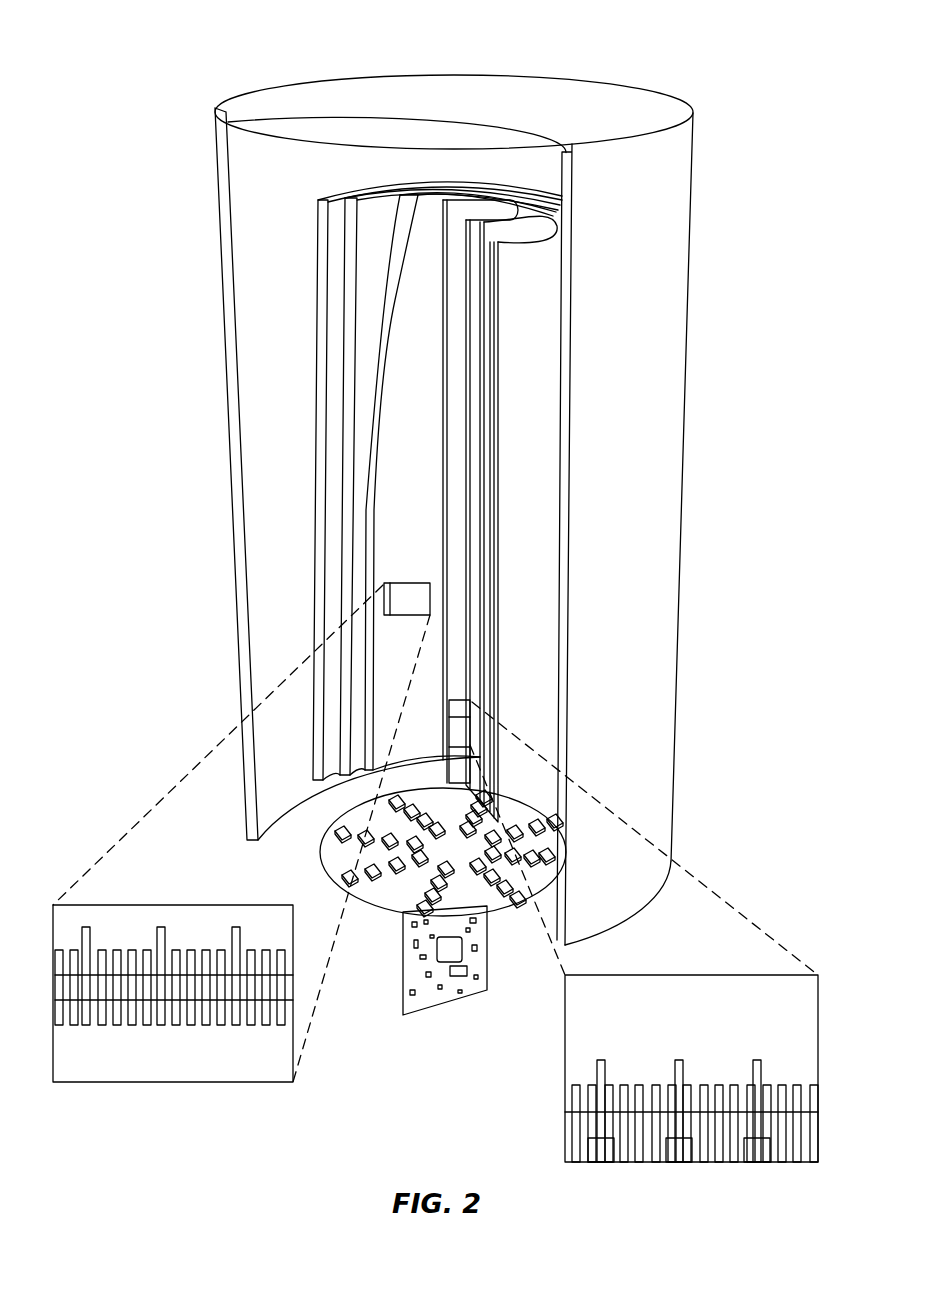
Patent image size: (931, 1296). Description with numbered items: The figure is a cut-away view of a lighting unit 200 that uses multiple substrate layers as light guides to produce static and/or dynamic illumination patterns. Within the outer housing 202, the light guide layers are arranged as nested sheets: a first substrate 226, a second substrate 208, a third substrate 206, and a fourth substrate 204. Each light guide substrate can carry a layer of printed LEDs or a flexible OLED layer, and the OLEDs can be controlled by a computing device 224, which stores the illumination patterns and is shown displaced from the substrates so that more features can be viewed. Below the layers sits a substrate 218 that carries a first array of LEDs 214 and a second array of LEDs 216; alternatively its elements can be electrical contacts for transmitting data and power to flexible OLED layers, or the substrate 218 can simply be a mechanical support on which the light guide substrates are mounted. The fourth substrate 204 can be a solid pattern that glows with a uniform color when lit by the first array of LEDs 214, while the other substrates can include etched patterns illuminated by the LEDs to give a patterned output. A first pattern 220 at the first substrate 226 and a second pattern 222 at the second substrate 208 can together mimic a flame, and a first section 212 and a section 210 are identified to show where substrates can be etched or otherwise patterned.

The lighting unit 200 is at (93, 88).
The cylindrical housing 202 is at (460, 123).
The fourth substrate 204 is at (316, 243).
The third substrate 206 is at (340, 333).
The second substrate 208 is at (367, 423).
The first substrate 226 is at (441, 510).
The first section 212 is at (412, 582).
The section 210 is at (456, 700).
The first array of LEDs 214 is at (345, 876).
The second array of LEDs 216 is at (503, 893).
The substrate 218 is at (358, 900).
The computing device 224 is at (456, 1015).
The second pattern 222 is at (230, 1037).
The first pattern 220 is at (730, 1055).